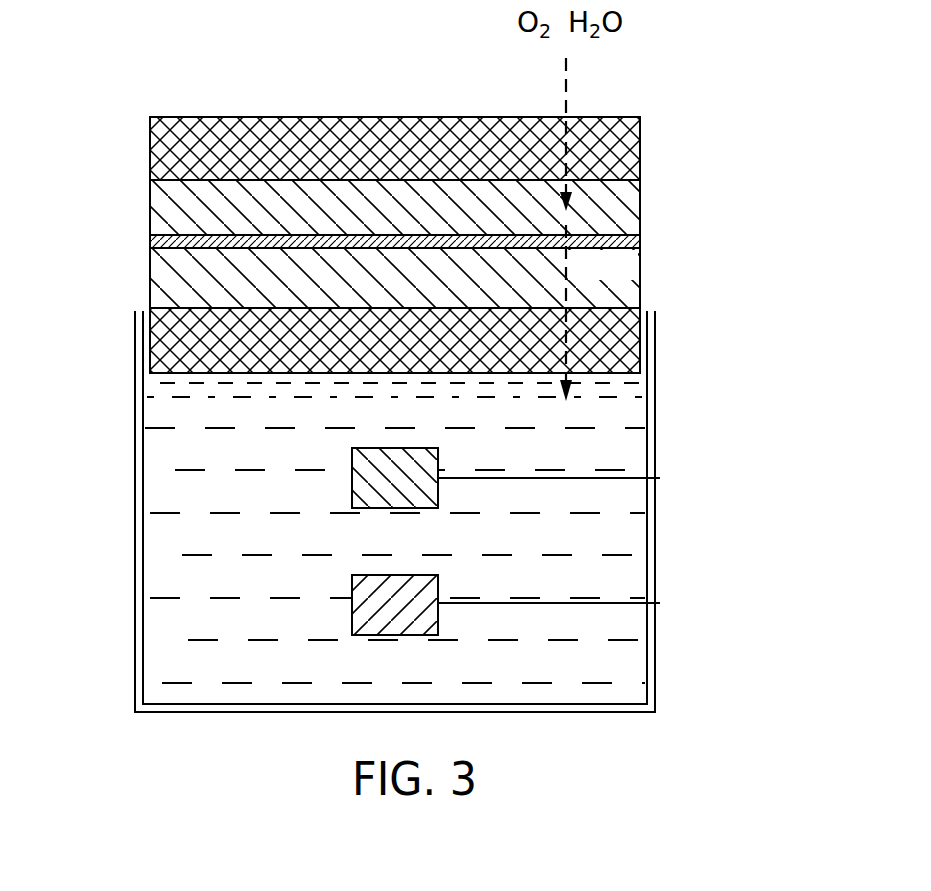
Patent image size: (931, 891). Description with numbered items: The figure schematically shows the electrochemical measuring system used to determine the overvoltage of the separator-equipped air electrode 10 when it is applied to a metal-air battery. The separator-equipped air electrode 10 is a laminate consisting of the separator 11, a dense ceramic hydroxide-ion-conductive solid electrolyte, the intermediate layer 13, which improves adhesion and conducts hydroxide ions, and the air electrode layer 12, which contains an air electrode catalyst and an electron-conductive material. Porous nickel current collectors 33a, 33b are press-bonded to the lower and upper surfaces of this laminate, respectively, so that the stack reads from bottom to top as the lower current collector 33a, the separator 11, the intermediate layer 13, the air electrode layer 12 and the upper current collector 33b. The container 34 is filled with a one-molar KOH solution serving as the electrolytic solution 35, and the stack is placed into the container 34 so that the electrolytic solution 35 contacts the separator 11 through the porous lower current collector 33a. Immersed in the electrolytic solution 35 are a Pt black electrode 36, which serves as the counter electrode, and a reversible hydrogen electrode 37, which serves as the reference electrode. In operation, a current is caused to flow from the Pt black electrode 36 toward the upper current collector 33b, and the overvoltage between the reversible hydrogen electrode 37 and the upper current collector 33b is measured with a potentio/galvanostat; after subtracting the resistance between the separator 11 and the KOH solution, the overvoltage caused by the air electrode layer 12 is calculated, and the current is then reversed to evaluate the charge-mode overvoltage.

The separator-equipped air electrode 10 is at (467, 244).
The separator 11 is at (437, 277).
The air electrode layer 12 is at (610, 215).
The intermediate layer 13 is at (617, 243).
The lower porous nickel current collector 33a is at (610, 350).
The upper porous nickel current collector 33b is at (617, 145).
The container 34 is at (652, 430).
The electrolytic solution 35 is at (623, 568).
The Pt black electrode 36 is at (352, 622).
The reversible hydrogen electrode 37 is at (352, 482).